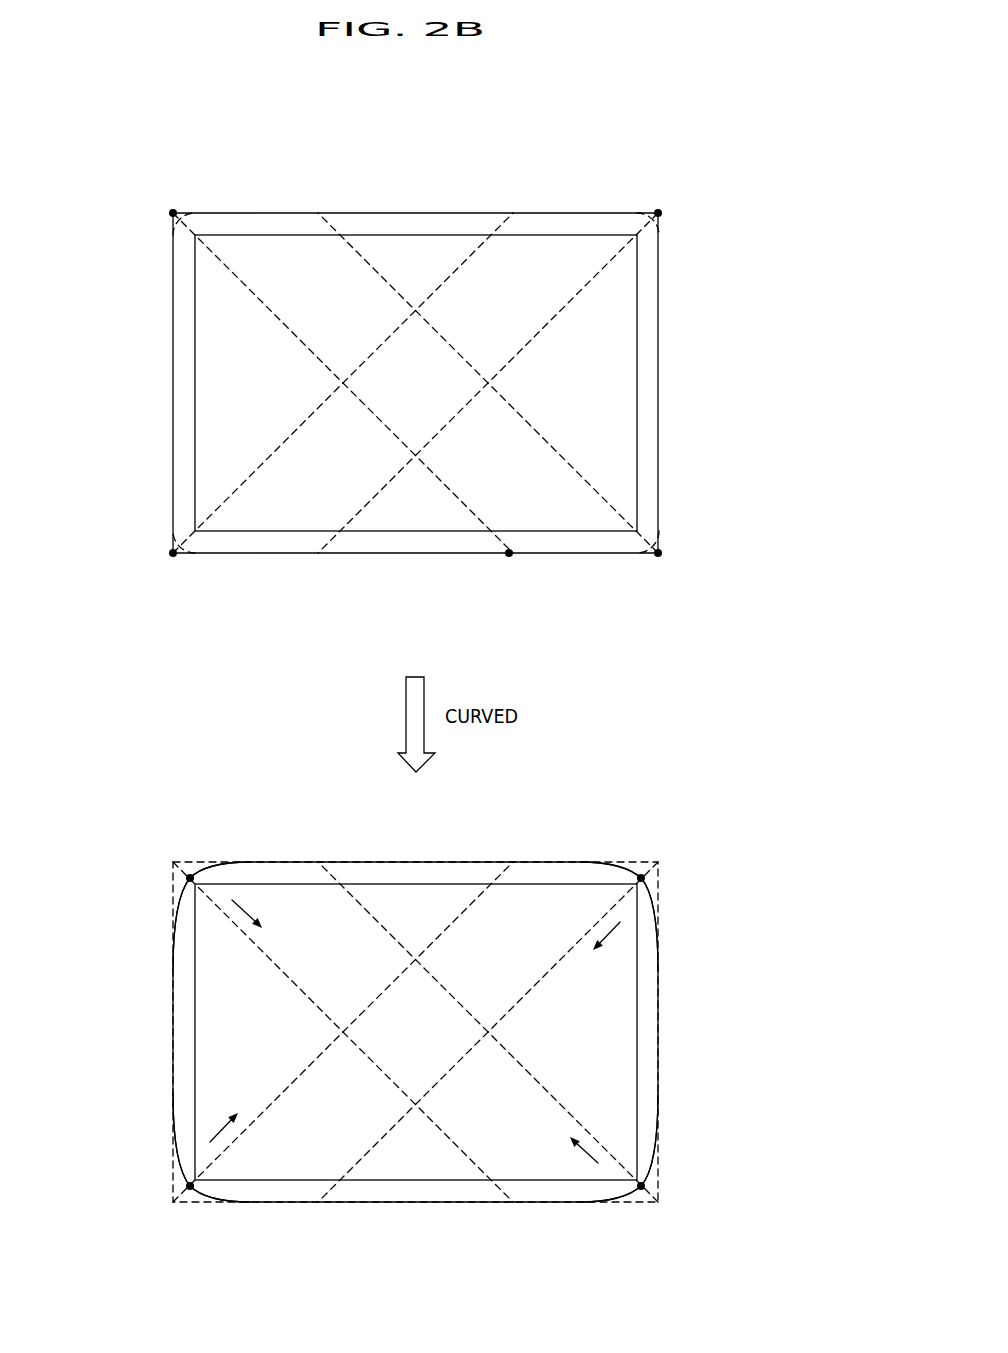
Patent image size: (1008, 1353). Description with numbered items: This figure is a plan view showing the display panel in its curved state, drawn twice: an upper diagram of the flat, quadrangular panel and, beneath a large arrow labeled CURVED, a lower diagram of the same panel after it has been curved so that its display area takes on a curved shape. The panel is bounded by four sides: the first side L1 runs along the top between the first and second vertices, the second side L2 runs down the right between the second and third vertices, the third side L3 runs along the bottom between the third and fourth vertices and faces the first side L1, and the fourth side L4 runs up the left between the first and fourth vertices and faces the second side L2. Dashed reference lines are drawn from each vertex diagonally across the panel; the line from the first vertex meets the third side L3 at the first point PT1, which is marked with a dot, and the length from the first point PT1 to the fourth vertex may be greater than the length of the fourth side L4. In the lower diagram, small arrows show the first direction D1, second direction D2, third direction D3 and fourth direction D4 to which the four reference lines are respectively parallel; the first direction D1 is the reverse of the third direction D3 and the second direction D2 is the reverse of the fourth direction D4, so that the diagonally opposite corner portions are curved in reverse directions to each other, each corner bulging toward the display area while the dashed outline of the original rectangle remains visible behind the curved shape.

The first side L1 is at (415, 213).
The second side L2 is at (658, 383).
The third side L3 is at (415, 553).
The fourth side L4 is at (173, 383).
The first point PT1 is at (509, 553).
The first direction D1 is at (253, 908).
The second direction D2 is at (615, 942).
The third direction D3 is at (579, 1156).
The fourth direction D4 is at (220, 1121).